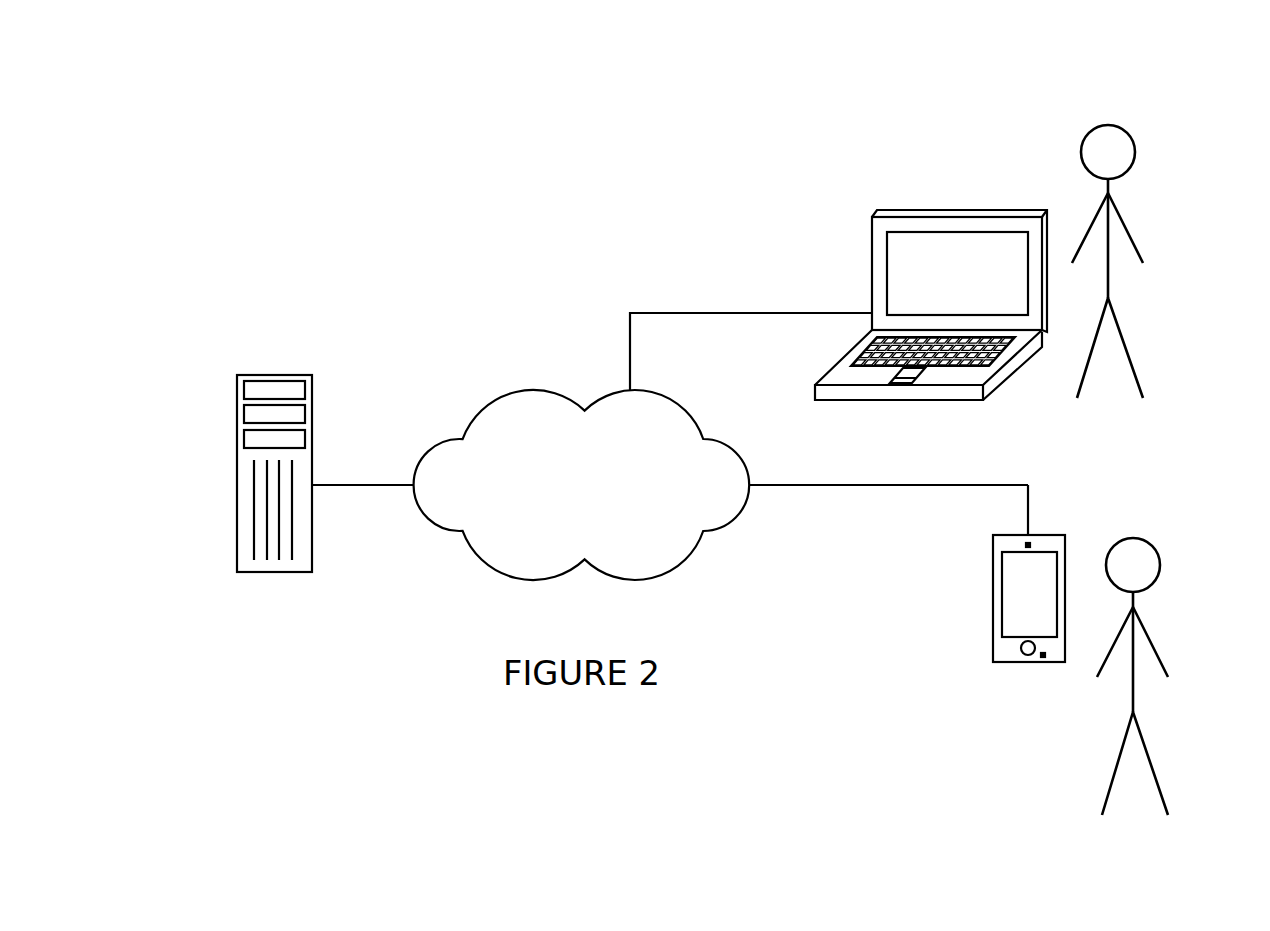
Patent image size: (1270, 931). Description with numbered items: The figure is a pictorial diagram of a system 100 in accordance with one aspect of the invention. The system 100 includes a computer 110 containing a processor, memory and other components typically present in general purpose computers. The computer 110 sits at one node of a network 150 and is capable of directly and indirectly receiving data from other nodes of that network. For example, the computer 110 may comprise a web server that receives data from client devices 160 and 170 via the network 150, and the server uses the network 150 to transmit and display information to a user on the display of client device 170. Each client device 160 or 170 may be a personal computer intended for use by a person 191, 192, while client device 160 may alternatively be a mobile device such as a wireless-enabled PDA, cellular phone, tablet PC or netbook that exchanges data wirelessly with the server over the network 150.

The system 100 is at (280, 81).
The computer 110 is at (237, 391).
The network 150 is at (530, 390).
The client device 160 is at (993, 557).
The client device 170 is at (872, 247).
The person 191 is at (1135, 207).
The person 192 is at (1158, 607).